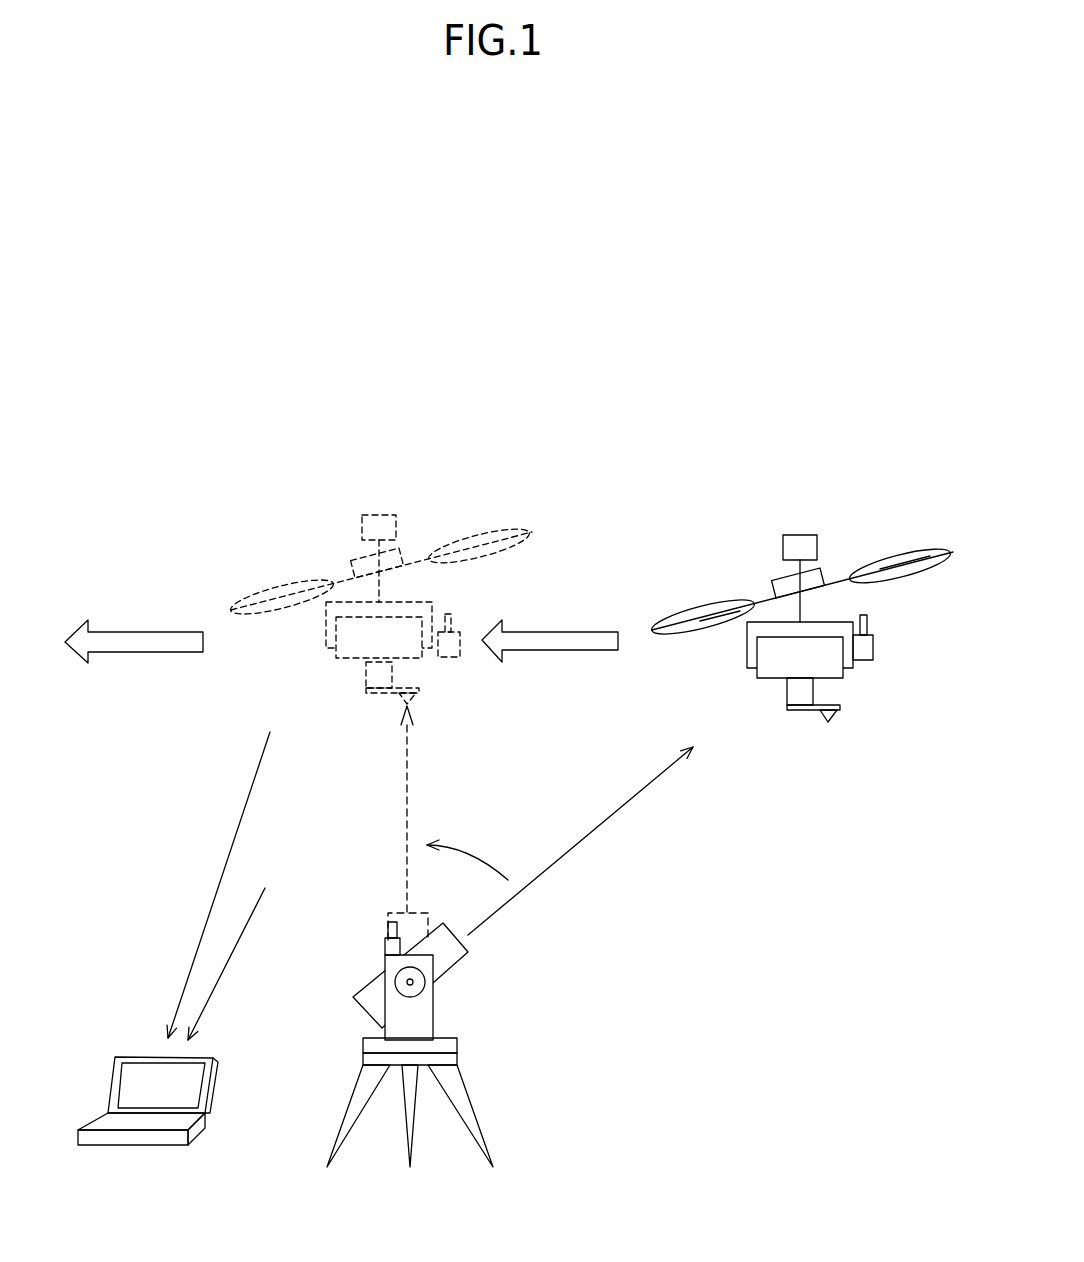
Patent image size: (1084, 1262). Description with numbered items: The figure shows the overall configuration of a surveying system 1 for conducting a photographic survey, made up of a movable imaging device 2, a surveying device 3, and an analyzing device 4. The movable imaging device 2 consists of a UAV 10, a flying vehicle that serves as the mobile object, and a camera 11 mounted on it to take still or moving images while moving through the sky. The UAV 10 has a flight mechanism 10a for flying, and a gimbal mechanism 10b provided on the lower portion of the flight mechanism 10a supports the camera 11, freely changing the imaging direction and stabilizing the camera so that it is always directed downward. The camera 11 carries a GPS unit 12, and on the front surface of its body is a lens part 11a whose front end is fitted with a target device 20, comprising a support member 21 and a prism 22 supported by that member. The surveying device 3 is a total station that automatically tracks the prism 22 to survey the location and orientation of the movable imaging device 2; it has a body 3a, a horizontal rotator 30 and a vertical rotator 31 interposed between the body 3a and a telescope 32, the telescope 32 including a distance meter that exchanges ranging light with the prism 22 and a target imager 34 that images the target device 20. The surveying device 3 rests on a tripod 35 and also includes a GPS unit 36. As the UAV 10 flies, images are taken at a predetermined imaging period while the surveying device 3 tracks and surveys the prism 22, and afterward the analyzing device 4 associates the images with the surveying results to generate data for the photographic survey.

The surveying system 1 is at (634, 376).
The movable imaging device 2 is at (799, 528).
The surveying device 3 is at (377, 916).
The body 3a is at (384, 963).
The analyzing device 4 is at (133, 1028).
The UAV 10 is at (834, 570).
The flight mechanism 10a is at (775, 583).
The gimbal mechanism 10b is at (747, 645).
The camera 11 is at (845, 678).
The lens part 11a is at (787, 694).
The GPS unit 12 is at (874, 648).
The target device 20 is at (832, 738).
The support member 21 is at (795, 712).
The prism 22 is at (836, 718).
The horizontal rotator 30 is at (442, 1034).
The vertical rotator 31 is at (368, 1022).
The telescope 32 is at (450, 968).
The target imager 34 is at (363, 1060).
The tripod 35 is at (352, 1092).
The GPS unit 36 is at (385, 945).